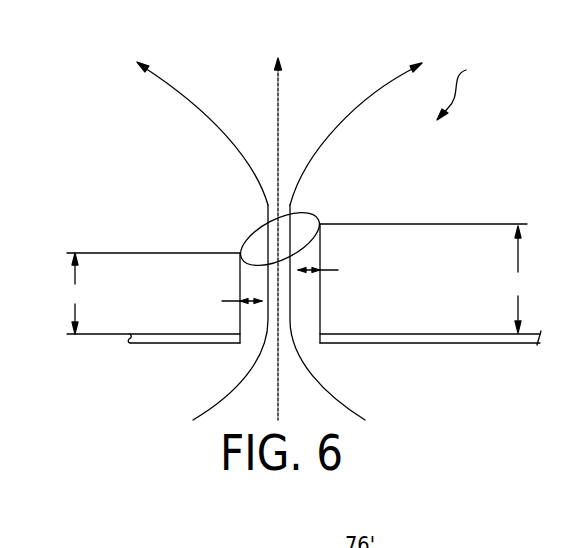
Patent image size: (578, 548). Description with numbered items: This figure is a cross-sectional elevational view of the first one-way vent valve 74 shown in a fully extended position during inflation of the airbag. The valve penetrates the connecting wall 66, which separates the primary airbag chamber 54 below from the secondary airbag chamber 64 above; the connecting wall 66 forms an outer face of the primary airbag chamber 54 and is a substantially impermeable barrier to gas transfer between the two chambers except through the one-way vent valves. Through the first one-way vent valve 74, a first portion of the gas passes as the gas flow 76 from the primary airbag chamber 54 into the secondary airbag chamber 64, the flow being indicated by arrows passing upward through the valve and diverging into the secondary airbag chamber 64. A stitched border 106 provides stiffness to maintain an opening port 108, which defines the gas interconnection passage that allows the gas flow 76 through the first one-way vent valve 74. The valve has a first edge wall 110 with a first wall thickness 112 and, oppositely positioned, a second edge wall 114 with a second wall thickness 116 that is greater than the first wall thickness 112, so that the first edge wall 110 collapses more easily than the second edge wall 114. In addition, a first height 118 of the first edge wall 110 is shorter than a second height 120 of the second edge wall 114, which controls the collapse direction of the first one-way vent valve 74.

The primary airbag chamber 54 is at (437, 376).
The secondary airbag chamber 64 is at (417, 193).
The connecting wall 66 is at (430, 322).
The first one-way vent valve 74 is at (467, 89).
The gas flow 76 is at (192, 97).
The stitched border 106 is at (240, 253).
The opening port 108 is at (303, 222).
The first edge wall 110 is at (240, 278).
The first wall thickness 112 is at (222, 302).
The second edge wall 114 is at (321, 297).
The second wall thickness 116 is at (336, 269).
The first height 118 is at (75, 293).
The second height 120 is at (520, 279).